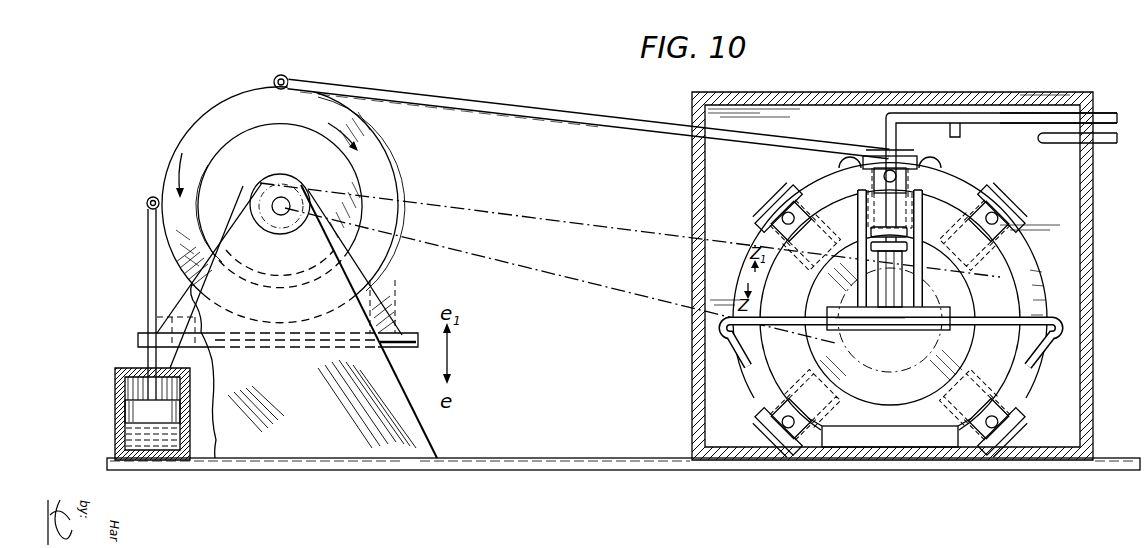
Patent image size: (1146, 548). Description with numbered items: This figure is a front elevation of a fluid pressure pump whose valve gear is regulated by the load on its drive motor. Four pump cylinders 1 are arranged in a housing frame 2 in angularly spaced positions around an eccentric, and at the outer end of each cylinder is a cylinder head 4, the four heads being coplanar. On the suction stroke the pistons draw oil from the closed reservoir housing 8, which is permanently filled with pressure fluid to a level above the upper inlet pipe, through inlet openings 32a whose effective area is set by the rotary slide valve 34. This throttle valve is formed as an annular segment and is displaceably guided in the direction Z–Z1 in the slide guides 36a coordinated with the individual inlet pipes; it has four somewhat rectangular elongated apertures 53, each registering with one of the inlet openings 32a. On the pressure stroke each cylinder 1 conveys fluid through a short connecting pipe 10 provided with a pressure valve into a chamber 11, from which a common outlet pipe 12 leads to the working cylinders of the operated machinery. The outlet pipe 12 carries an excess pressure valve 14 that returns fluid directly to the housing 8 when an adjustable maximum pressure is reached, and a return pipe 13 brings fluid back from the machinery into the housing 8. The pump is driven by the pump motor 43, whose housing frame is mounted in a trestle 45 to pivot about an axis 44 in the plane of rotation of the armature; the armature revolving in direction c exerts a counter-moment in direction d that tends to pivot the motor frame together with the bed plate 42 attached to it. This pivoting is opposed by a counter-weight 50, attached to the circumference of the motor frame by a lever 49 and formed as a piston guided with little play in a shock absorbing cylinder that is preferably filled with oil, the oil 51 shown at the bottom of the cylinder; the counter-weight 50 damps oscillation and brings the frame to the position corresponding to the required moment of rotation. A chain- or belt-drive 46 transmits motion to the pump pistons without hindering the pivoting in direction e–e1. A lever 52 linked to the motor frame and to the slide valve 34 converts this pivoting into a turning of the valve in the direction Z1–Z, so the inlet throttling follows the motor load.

The pump cylinder 1 is at (1020, 246).
The housing frame 2 is at (1034, 361).
The cylinder head 4 is at (968, 204).
The reservoir housing 8 is at (694, 171).
The connecting pipe 10 is at (843, 170).
The chamber 11 is at (884, 325).
The outlet pipe 12 is at (1019, 123).
The return pipe 13 is at (1104, 143).
The excess pressure valve 14 is at (958, 134).
The inlet opening 32a is at (998, 220).
The rotary slide valve 34 is at (1046, 285).
The slide guide 36a is at (768, 215).
The bed plate 42 is at (403, 336).
The pump motor 43 is at (214, 119).
The axis 44 is at (284, 215).
The trestle 45 is at (305, 443).
The chain- or belt-drive 46 is at (567, 218).
The lever 49 is at (148, 280).
The counter-weight 50 is at (130, 412).
The fluid 51 is at (116, 438).
The lever 52 is at (571, 116).
The aperture 53 is at (786, 203).